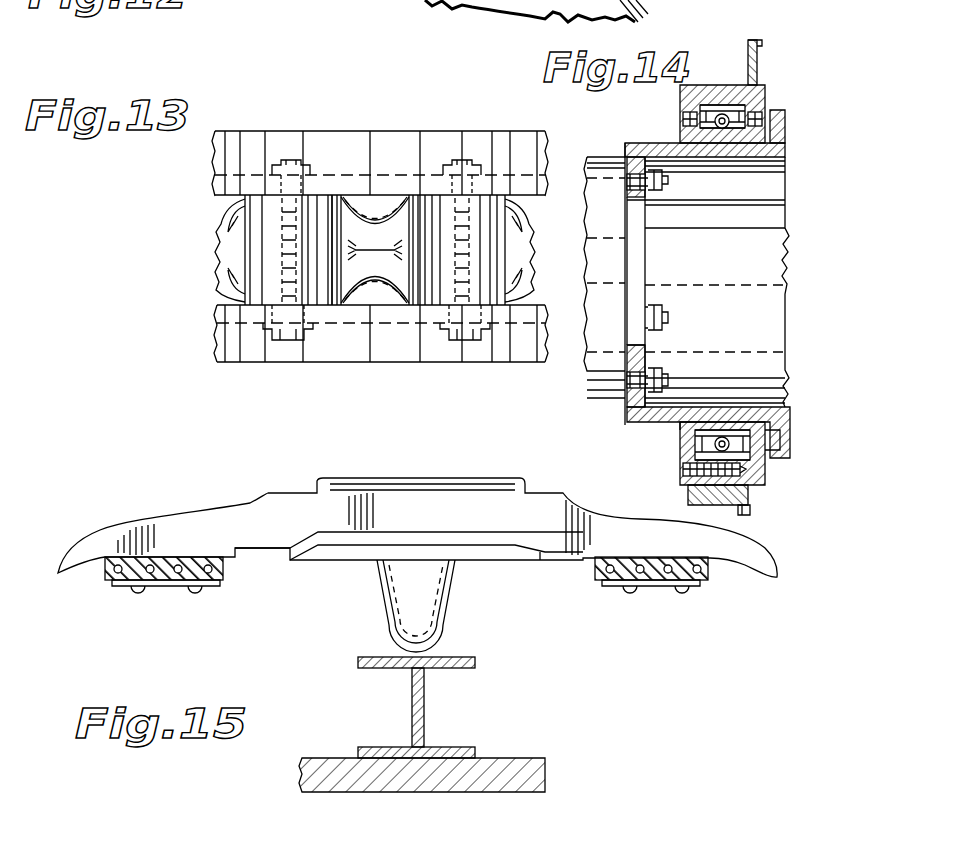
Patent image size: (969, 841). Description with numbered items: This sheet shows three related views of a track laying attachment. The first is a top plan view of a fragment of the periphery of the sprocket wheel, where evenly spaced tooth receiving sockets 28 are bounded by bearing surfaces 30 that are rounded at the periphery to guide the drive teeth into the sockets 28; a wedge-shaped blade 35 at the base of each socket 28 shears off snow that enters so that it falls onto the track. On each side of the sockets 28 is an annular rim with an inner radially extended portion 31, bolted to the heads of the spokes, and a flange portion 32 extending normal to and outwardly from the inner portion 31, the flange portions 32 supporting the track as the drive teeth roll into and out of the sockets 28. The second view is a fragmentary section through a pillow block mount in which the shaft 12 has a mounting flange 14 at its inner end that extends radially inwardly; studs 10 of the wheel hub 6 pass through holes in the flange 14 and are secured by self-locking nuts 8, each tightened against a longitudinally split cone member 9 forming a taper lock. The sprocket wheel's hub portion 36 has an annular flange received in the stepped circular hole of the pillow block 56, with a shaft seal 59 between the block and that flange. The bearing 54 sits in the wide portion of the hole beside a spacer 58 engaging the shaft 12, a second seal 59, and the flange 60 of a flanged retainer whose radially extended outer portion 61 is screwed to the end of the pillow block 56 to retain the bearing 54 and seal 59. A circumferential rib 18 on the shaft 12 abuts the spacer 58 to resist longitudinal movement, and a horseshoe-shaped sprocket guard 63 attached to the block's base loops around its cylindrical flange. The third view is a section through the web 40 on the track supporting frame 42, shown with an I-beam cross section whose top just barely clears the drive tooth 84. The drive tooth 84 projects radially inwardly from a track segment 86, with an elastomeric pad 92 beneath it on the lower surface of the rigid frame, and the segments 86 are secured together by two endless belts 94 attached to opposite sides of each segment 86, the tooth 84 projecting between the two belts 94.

In FIG. 14, the wheel hub 6 is at (607, 355).
In FIG. 14, the nut 8 is at (650, 182).
In FIG. 14, the cone member 9 is at (650, 200).
In FIG. 14, the stud 10 is at (633, 172).
In FIG. 14, the shaft 12 is at (646, 422).
In FIG. 14, the mounting flange 14 is at (640, 352).
In FIG. 14, the circumferential rib 18 is at (662, 142).
In FIG. 13, the tooth receiving socket 28 is at (372, 268).
In FIG. 13, the bearing surface 30 is at (487, 255).
In FIG. 13, the inner radially extended portion 31 is at (387, 185).
In FIG. 13, the flange portion 32 is at (342, 150).
In FIG. 13, the wedge-shaped blade 35 is at (371, 252).
In FIG. 14, the hub portion 36 is at (763, 137).
In FIG. 15, the web 40 is at (412, 703).
In FIG. 15, the track supporting frame 42 is at (503, 772).
In FIG. 14, the bearing 54 is at (733, 425).
In FIG. 14, the pillow block 56 is at (728, 90).
In FIG. 14, the spacer 58 is at (698, 425).
In FIG. 14, the shaft seal 59 is at (683, 458).
In FIG. 14, the flange of flanged retainer 60 is at (682, 100).
In FIG. 14, the radially extended outer portion of flanged retainer 61 is at (755, 119).
In FIG. 14, the sprocket guard 63 is at (758, 62).
In FIG. 15, the drive tooth 84 is at (429, 596).
In FIG. 15, the segment 86 is at (110, 523).
In FIG. 15, the elastomeric pad 92 is at (320, 490).
In FIG. 15, the endless belt 94 is at (225, 567).